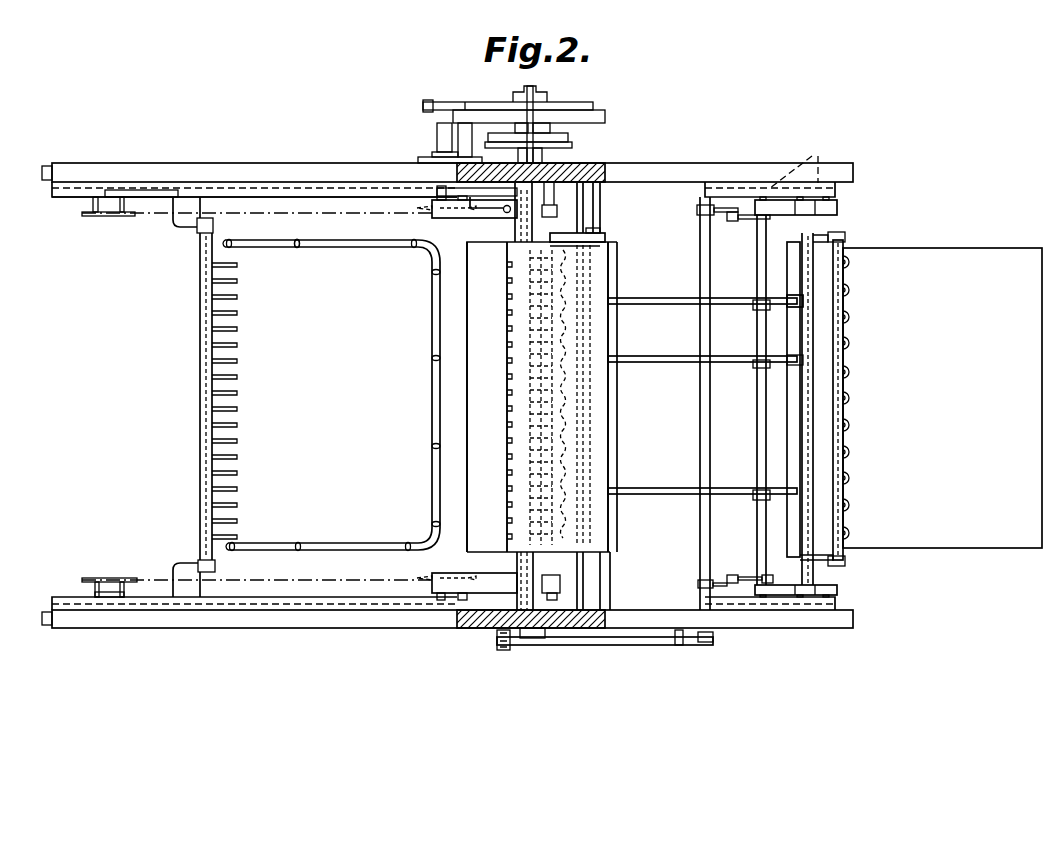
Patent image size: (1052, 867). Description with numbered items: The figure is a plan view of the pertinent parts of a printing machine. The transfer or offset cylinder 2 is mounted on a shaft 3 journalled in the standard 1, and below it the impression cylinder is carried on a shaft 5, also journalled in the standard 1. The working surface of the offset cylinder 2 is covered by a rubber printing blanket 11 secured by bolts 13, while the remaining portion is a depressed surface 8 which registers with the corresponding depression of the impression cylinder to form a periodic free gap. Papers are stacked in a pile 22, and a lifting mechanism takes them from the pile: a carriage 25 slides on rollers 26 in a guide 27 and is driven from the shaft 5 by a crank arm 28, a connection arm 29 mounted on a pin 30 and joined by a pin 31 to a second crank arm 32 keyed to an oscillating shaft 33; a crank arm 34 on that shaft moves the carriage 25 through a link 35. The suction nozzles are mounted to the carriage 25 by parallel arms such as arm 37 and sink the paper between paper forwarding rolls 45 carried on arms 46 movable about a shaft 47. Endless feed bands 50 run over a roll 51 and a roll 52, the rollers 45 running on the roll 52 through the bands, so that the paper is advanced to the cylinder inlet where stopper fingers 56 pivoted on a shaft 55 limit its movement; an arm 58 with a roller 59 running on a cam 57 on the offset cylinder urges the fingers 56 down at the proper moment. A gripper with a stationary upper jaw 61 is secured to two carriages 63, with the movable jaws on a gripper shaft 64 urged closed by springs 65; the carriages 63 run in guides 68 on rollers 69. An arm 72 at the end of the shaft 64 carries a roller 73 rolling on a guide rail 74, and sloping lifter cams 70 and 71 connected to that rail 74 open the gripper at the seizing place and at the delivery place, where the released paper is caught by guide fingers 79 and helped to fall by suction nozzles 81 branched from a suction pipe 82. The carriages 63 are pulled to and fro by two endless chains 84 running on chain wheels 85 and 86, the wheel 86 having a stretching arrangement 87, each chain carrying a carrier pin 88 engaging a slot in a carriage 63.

The standard 1 is at (585, 165).
The transfer or offset cylinder 2 is at (480, 244).
The shaft 3 is at (516, 224).
The shaft 5 is at (543, 152).
The depressed surface 8 is at (468, 283).
The printing blanket 11 is at (508, 304).
The bolts 13 is at (507, 285).
The pile 22 is at (924, 256).
The carriage 25 is at (839, 207).
The rollers 26 is at (800, 160).
The guide 27 is at (740, 186).
The crank arm 28 is at (497, 640).
The connection arm 29 is at (600, 646).
The pin 30 is at (499, 646).
The pin 31 is at (677, 646).
The second crank arm 32 is at (704, 643).
The shaft 33 is at (711, 536).
The crank arm 34 is at (714, 213).
The link 35 is at (745, 222).
The arm 37 is at (843, 238).
The paper forwarding rolls 45 is at (801, 299).
The arms 46 is at (795, 306).
The shaft 47 is at (758, 325).
The endless feed bands 50 is at (686, 306).
The roll 51 is at (610, 381).
The roll 52 is at (790, 379).
The shaft 55 is at (586, 216).
The stopper fingers 56 is at (600, 274).
The cam 57 is at (604, 241).
The arm 58 is at (606, 234).
The roller 59 is at (578, 231).
The stationary upper jaw 61 is at (566, 247).
The carriages 63 is at (465, 218).
The gripper shaft 64 is at (506, 278).
The springs 65 is at (348, 612).
The guides 68 is at (290, 192).
The rollers 69 is at (437, 190).
The lifter cam 70 is at (440, 192).
The lifter cam 71 is at (150, 192).
The arm 72 is at (560, 210).
The roller 73 is at (484, 196).
The guide rail 74 is at (383, 198).
The guide fingers 79 is at (236, 296).
The suction nozzles 81 is at (298, 247).
The suction pipe 82 is at (330, 242).
The endless chains 84 is at (279, 215).
The chain wheel 85 is at (420, 212).
The chain wheel 86 is at (118, 216).
The stretching arrangement 87 is at (52, 172).
The carrier pin 88 is at (458, 212).